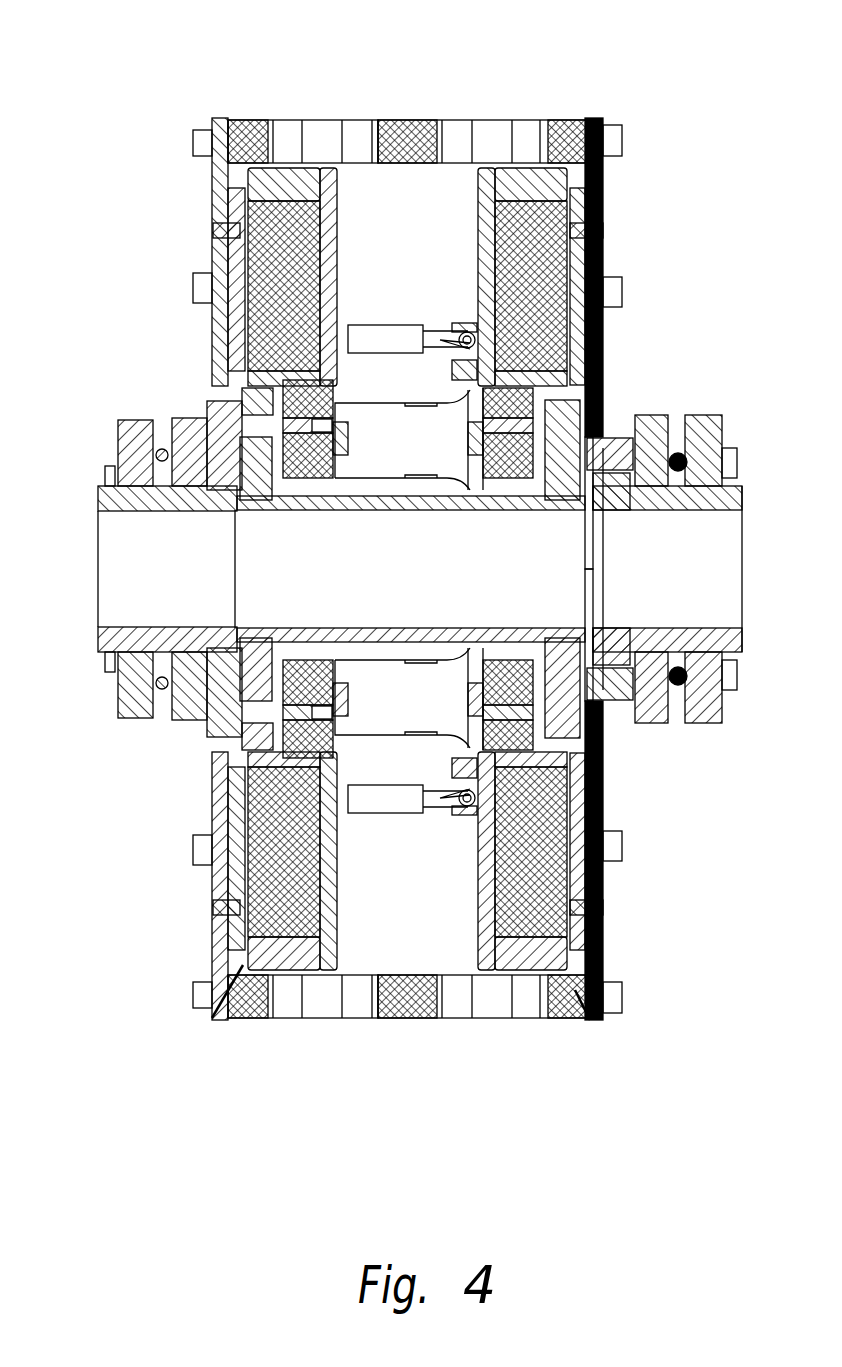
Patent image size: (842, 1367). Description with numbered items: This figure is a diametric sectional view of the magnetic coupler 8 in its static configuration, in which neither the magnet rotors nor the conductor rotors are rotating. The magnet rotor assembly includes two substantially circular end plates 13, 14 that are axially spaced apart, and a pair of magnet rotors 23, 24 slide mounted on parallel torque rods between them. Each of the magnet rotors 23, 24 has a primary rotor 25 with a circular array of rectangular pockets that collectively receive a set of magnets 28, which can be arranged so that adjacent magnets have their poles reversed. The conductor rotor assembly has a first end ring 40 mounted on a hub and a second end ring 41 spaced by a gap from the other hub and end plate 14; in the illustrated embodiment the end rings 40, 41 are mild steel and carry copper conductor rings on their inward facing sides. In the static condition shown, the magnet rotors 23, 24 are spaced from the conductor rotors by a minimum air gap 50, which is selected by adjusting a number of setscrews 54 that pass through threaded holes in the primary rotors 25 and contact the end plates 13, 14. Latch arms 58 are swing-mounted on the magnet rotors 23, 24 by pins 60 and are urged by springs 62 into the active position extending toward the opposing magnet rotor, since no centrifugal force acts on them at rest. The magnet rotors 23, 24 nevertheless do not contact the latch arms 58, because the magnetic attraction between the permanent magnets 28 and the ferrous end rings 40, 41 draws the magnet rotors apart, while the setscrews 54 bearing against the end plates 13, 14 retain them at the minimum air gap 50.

The magnetic coupler 8 is at (72, 117).
The end plate 13 is at (207, 730).
The end plate 14 is at (530, 712).
The magnet rotor 23 is at (527, 973).
The magnet rotor 24 is at (290, 973).
The primary rotor 25 is at (250, 860).
The magnets 28 is at (575, 898).
The end ring 40 is at (215, 858).
The end ring 41 is at (597, 878).
The minimum air gap 50 is at (212, 1018).
The setscrews 54 is at (247, 797).
The latch arms 58 is at (447, 813).
The pins 60 is at (380, 813).
The springs 62 is at (465, 792).